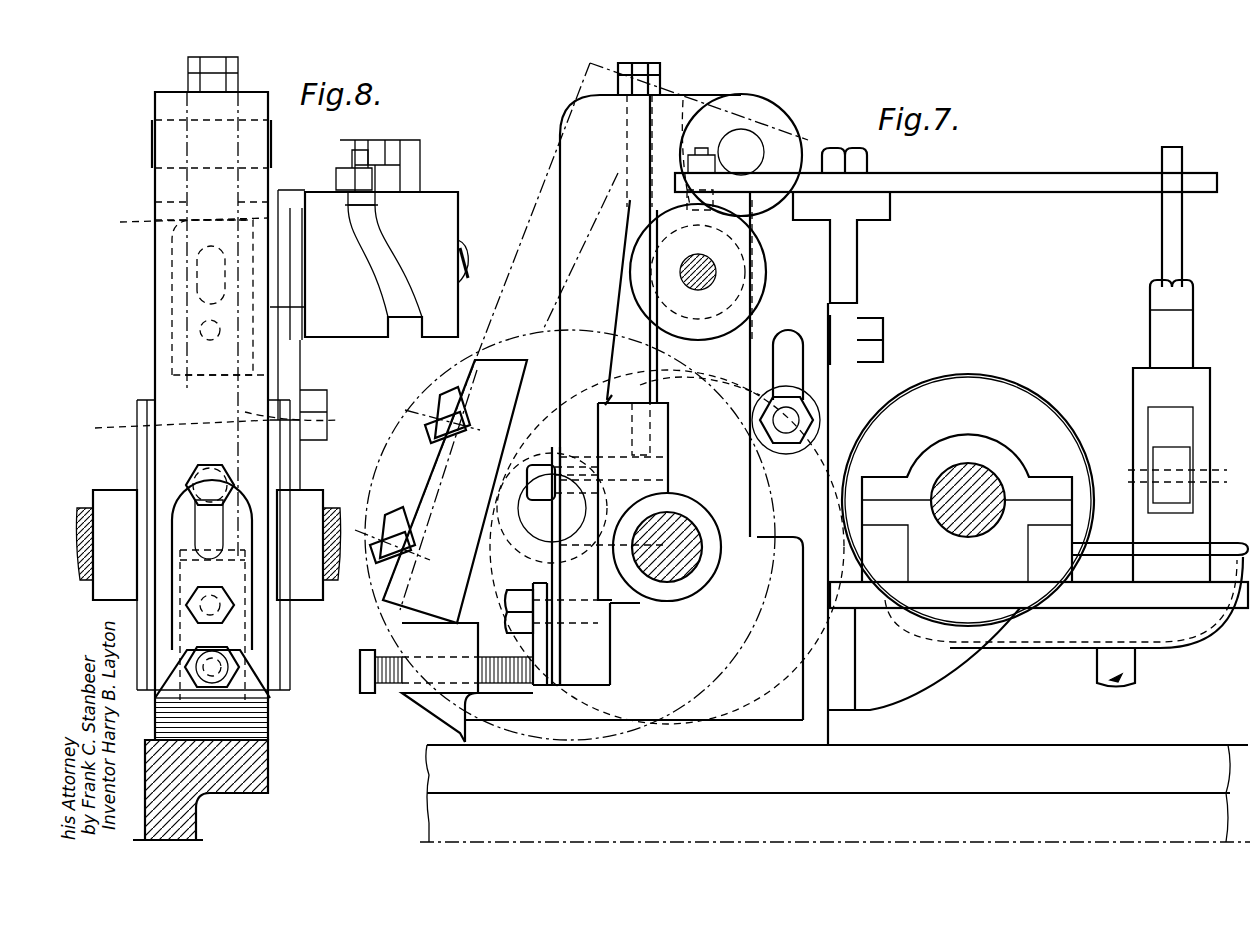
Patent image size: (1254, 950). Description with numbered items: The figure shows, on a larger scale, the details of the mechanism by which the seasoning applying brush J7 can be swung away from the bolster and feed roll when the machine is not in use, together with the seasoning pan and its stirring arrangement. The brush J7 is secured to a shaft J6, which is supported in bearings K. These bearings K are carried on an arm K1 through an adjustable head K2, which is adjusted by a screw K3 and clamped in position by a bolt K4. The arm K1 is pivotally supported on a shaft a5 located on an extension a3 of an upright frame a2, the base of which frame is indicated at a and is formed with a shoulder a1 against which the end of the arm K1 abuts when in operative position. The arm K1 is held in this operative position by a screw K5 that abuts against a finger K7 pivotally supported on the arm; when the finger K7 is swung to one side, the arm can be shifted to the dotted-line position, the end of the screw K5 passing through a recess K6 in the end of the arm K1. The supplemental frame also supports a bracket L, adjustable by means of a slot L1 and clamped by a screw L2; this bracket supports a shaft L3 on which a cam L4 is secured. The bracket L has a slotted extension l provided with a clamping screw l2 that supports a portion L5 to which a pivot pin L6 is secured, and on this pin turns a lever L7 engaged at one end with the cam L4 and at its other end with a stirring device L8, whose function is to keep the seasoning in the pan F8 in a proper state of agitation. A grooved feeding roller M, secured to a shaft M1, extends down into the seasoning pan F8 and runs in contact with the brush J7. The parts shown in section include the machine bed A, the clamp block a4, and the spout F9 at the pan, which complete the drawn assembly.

In FIG. 8, the bed of the machine A is at (255, 778).
In FIG. 7, the bed of the machine A is at (835, 793).
In FIG. 8, the base of upright frame a is at (250, 712).
In FIG. 7, the base of upright frame a is at (634, 713).
In FIG. 7, the shoulder a1 is at (613, 680).
In FIG. 8, the upright frame a2 is at (303, 419).
In FIG. 7, the upright frame a2 is at (786, 471).
In FIG. 8, the extension of upright frame a3 is at (181, 318).
In FIG. 7, the extension of upright frame a3 is at (700, 369).
In FIG. 8, the clamp block a4 is at (228, 680).
In FIG. 7, the clamp block a4 is at (440, 682).
In FIG. 8, the shaft a5 is at (271, 150).
In FIG. 7, the shaft a5 is at (741, 152).
In FIG. 8, the bearings K is at (199, 545).
In FIG. 7, the bearings K is at (667, 547).
In FIG. 8, the arm K1 is at (175, 255).
In FIG. 7, the arm K1 is at (598, 298).
In FIG. 7, the adjustable head K2 is at (600, 513).
In FIG. 7, the screw K3 is at (644, 249).
In FIG. 8, the bolt K4 is at (212, 582).
In FIG. 7, the bolt K4 is at (552, 566).
In FIG. 8, the screw K5 is at (255, 690).
In FIG. 7, the screw K5 is at (385, 695).
In FIG. 7, the recess K6 is at (550, 692).
In FIG. 8, the finger K7 is at (232, 600).
In FIG. 7, the finger K7 is at (515, 590).
In FIG. 8, the shaft J6 is at (80, 512).
In FIG. 7, the shaft J6 is at (685, 565).
In FIG. 8, the seasoning applying brush J7 is at (375, 490).
In FIG. 7, the seasoning applying brush J7 is at (765, 696).
In FIG. 8, the bracket L is at (288, 355).
In FIG. 7, the bracket L is at (847, 312).
In FIG. 8, the slot L1 is at (200, 300).
In FIG. 7, the slot L1 is at (788, 365).
In FIG. 8, the screw L2 is at (300, 395).
In FIG. 7, the screw L2 is at (885, 330).
In FIG. 8, the shaft L3 is at (468, 250).
In FIG. 7, the shaft L3 is at (718, 268).
In FIG. 8, the cam L4 is at (381, 264).
In FIG. 7, the cam L4 is at (755, 260).
In FIG. 7, the portion L5 is at (870, 208).
In FIG. 8, the pivot pin L6 is at (385, 150).
In FIG. 7, the pivot pin L6 is at (835, 150).
In FIG. 8, the lever L7 is at (336, 178).
In FIG. 7, the lever L7 is at (942, 184).
In FIG. 7, the stirring device L8 is at (1195, 340).
In FIG. 8, the extension of bracket l is at (200, 335).
In FIG. 8, the clamping screw l2 is at (185, 376).
In FIG. 7, the grooved feeding roller M is at (1000, 392).
In FIG. 7, the shaft M1 is at (975, 490).
In FIG. 7, the pan F8 is at (1038, 633).
In FIG. 7, the drain spout F9 is at (1137, 665).